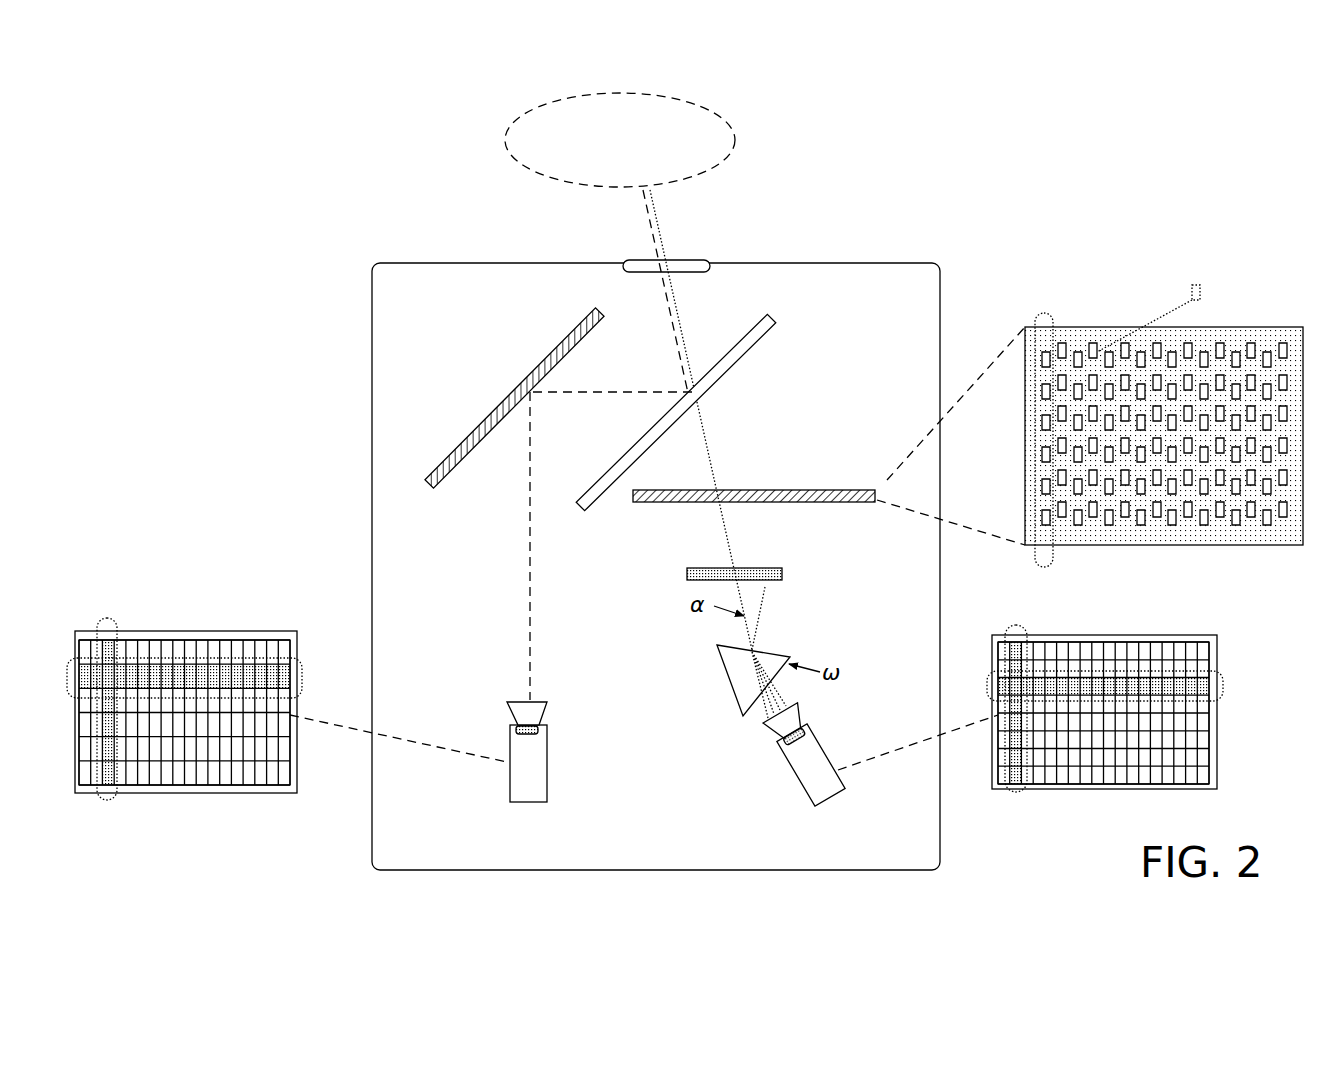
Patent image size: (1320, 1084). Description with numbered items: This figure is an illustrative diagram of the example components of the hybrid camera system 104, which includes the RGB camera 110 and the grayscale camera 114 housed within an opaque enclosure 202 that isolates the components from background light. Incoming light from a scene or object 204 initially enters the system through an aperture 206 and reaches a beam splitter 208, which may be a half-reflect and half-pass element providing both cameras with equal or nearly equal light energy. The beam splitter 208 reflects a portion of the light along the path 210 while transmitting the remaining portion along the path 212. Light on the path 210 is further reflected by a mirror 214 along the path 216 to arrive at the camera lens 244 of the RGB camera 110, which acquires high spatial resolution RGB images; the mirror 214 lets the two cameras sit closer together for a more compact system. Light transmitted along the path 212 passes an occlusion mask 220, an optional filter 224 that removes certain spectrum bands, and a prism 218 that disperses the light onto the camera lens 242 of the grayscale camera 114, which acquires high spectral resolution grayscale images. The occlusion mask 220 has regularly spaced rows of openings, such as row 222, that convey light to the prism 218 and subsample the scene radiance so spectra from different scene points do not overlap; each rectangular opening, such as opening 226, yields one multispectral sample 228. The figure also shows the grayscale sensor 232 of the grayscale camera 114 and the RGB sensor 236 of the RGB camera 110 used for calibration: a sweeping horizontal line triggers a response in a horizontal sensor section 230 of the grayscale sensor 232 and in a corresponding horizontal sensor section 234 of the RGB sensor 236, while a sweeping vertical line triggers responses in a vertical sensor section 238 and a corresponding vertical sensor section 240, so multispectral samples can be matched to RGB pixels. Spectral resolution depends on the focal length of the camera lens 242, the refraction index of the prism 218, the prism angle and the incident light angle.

The hybrid camera system 104 is at (656, 549).
The RGB camera 110 is at (500, 754).
The grayscale camera 114 is at (753, 755).
The opaque enclosure 202 is at (876, 263).
The scene or object 204 is at (620, 140).
The aperture 206 is at (688, 262).
The beam splitter 208 is at (747, 352).
The path 210 is at (580, 393).
The path 212 is at (710, 457).
The mirror 214 is at (563, 341).
The path 216 is at (540, 625).
The prism 218 is at (738, 707).
The occlusion mask 220 is at (823, 502).
The row 222 is at (1164, 407).
The filter 224 is at (703, 568).
The opening 226 is at (1093, 352).
The multispectral sample 228 is at (1197, 285).
The horizontal sensor section 230 is at (1222, 672).
The grayscale sensor 232 is at (1135, 716).
The horizontal sensor section 234 is at (302, 680).
The RGB sensor 236 is at (215, 714).
The vertical sensor section 238 is at (1020, 790).
The vertical sensor section 240 is at (108, 800).
The camera lens 242 is at (779, 743).
The camera lens 244 is at (512, 726).